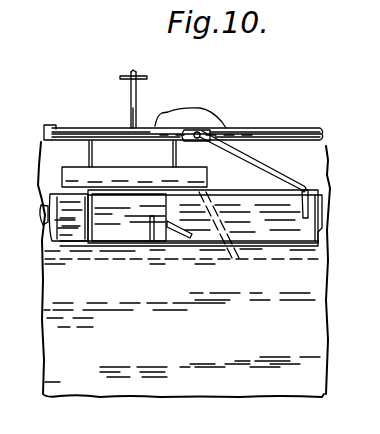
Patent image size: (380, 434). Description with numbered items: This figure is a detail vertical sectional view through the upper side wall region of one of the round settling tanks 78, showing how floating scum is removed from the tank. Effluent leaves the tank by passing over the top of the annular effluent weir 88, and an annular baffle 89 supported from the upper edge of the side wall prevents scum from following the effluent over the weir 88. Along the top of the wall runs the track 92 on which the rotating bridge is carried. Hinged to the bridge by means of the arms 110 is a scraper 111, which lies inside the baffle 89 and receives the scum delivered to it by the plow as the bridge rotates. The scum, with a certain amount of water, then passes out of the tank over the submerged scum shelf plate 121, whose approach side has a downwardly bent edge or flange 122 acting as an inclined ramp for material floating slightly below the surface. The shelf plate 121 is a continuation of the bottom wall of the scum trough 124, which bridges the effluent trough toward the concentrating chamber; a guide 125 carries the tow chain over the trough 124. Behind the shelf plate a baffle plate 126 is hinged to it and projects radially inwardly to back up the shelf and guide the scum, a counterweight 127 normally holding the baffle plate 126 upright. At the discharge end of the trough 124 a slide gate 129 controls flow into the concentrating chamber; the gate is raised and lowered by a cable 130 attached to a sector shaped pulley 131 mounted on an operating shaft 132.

The round settling tank 78 is at (184, 269).
The annular effluent weir 88 is at (313, 247).
The annular baffle 89 is at (268, 244).
The track 92 is at (273, 128).
The arms 110 is at (277, 178).
The scraper 111 is at (303, 200).
The scum shelf plate 121 is at (147, 224).
The downwardly bent edge or flange 122 is at (192, 238).
The scum trough 124 is at (151, 175).
The guide 125 is at (73, 166).
The baffle plate 126 is at (85, 197).
The counterweight 127 is at (80, 246).
The slide gate 129 is at (165, 150).
The cable 130 is at (130, 112).
The sector shaped pulley 131 is at (128, 84).
The operating shaft 132 is at (141, 77).